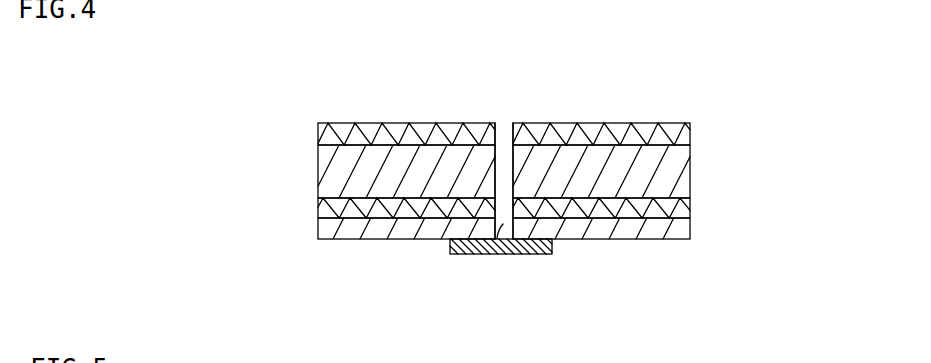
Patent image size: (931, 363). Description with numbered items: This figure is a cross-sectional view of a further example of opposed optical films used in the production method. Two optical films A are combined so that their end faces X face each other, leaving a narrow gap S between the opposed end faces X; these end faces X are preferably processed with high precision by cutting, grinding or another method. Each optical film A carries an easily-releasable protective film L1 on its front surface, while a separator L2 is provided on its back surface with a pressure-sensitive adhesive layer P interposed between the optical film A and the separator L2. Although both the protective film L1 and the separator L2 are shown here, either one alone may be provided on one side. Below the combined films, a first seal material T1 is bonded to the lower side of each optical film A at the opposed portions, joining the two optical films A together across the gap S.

The protective film L1 is at (342, 126).
The optical film A is at (318, 173).
The pressure-sensitive adhesive layer P is at (320, 210).
The separator L2 is at (352, 238).
The end face X is at (493, 126).
The first seal material T1 is at (522, 254).
The gap S is at (500, 229).